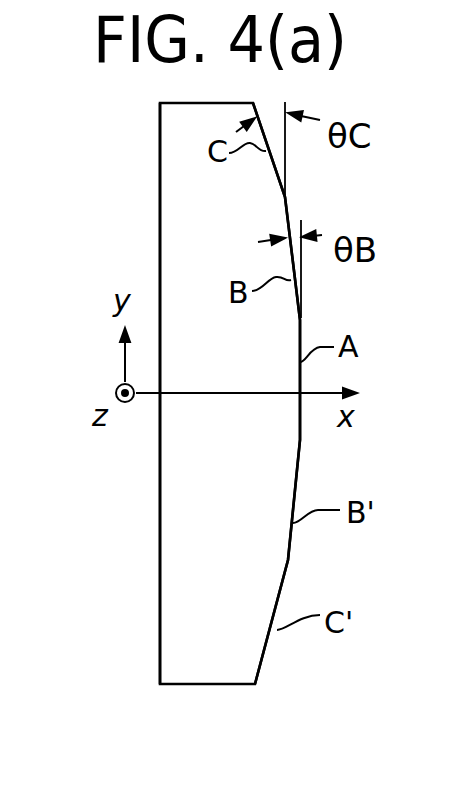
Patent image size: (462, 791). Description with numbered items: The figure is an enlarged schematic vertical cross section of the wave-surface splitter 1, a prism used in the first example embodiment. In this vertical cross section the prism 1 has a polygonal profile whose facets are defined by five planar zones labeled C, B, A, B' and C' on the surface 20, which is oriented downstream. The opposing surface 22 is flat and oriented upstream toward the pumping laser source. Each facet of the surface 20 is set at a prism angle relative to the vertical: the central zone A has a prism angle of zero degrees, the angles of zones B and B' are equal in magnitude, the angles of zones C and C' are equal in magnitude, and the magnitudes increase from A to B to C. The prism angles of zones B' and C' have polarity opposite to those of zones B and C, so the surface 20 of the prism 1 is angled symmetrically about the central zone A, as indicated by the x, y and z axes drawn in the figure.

The wave-surface splitter 1 is at (186, 665).
The surface 20 is at (272, 562).
The opposing surface 22 is at (160, 452).